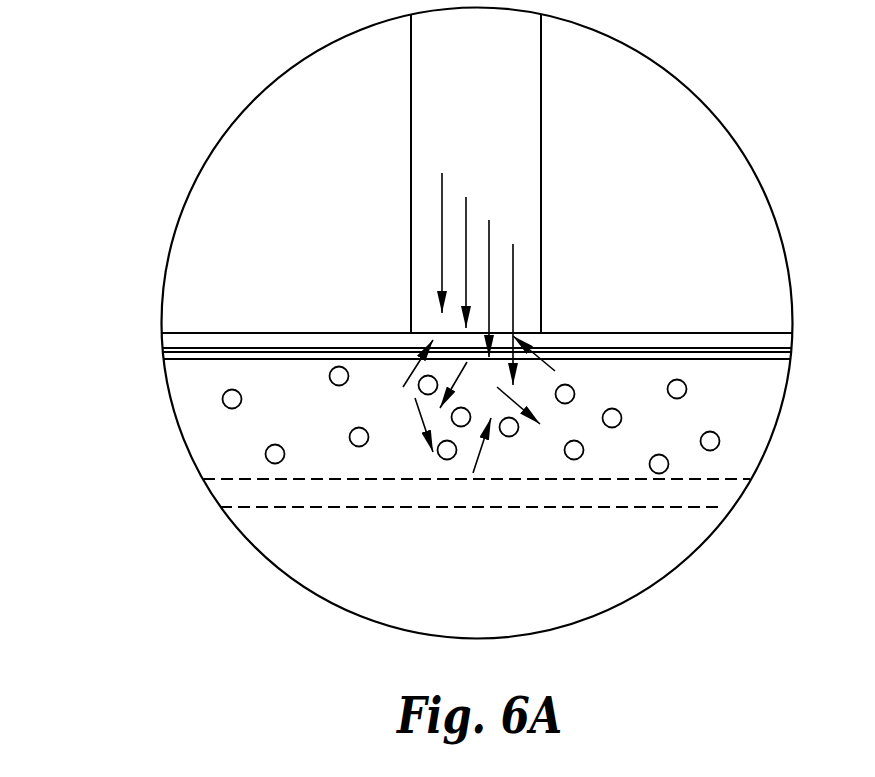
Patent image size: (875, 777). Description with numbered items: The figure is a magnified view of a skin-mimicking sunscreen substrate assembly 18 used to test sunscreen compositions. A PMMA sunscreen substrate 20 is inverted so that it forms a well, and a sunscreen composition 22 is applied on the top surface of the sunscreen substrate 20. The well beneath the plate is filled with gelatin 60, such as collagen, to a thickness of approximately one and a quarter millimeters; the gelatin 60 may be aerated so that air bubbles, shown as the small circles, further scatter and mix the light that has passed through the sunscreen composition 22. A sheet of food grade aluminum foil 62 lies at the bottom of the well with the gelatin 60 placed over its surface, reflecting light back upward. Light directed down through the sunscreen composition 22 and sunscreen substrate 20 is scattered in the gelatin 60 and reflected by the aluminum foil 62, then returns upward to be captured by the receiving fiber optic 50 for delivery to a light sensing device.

The receiving fiber optic 50 is at (541, 122).
The sunscreen composition 22 is at (162, 340).
The sunscreen substrate 20 is at (162, 356).
The sunscreen substrate assembly 18 is at (752, 506).
The gelatin 60 is at (178, 417).
The aluminum foil 62 is at (218, 494).